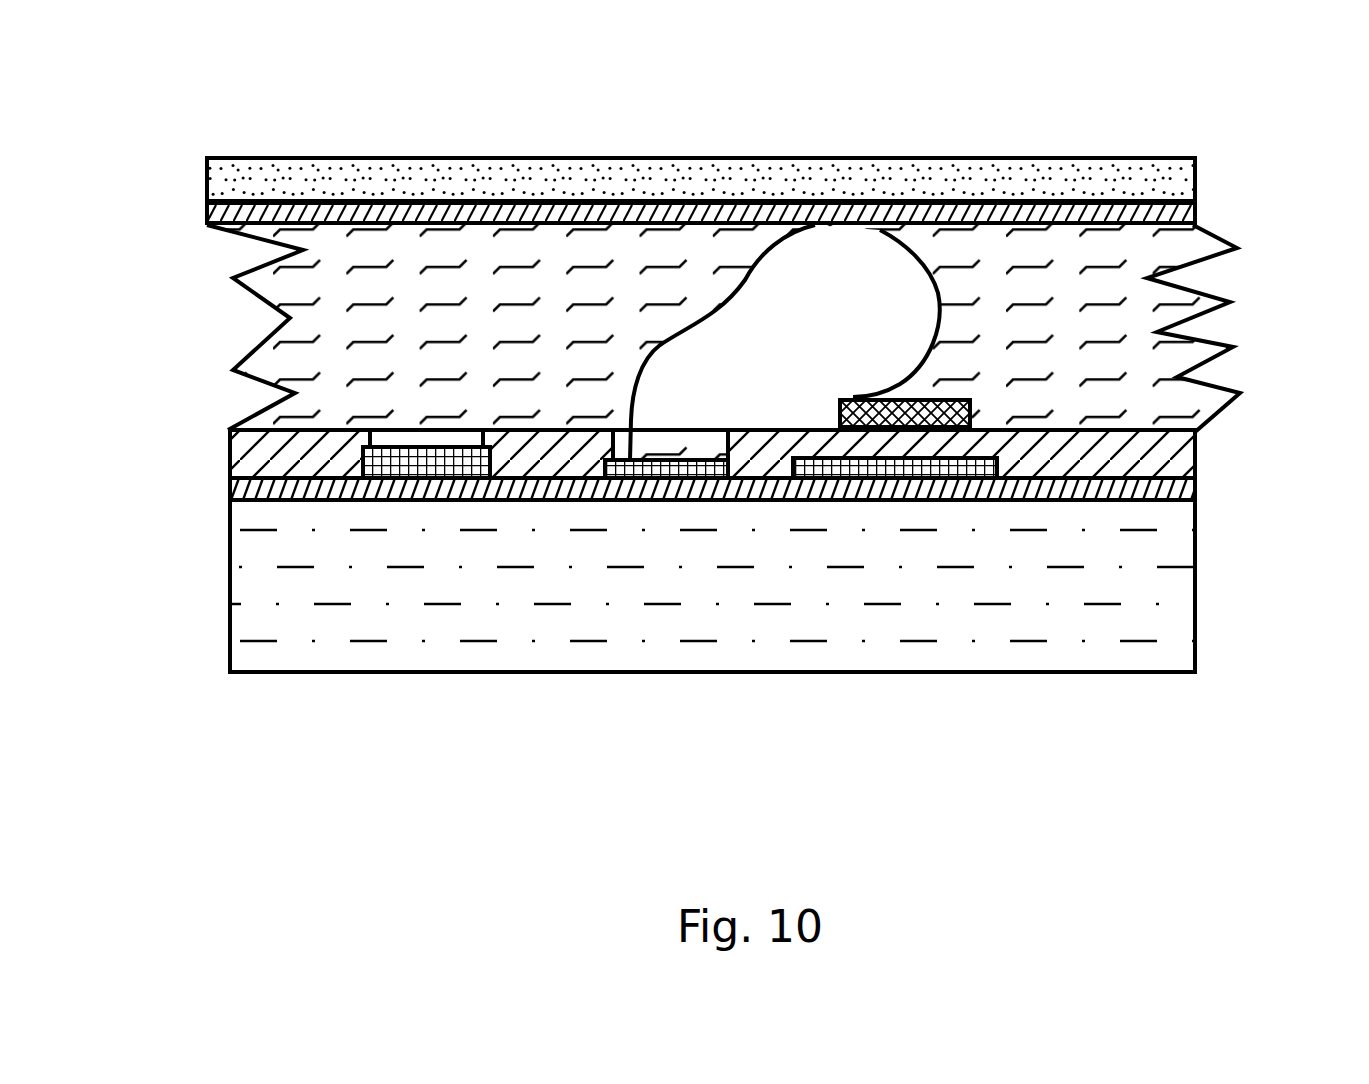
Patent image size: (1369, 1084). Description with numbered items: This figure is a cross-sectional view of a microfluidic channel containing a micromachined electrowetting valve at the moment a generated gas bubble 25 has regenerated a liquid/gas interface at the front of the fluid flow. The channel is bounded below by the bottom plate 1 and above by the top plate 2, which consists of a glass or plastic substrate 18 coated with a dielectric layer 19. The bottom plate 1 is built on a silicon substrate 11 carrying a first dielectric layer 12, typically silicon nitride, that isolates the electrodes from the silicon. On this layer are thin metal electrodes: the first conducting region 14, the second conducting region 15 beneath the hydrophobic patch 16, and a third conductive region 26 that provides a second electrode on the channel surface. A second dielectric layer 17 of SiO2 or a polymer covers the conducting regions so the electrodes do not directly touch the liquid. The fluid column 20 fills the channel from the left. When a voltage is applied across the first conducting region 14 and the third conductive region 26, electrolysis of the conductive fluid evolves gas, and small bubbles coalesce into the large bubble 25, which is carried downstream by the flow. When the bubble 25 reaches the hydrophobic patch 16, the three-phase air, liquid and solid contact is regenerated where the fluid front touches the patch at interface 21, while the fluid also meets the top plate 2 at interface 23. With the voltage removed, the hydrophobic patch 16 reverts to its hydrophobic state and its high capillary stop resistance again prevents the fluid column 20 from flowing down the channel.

The bottom plate 1 is at (530, 633).
The top plate 2 is at (1173, 178).
The silicon substrate 11 is at (367, 627).
The first dielectric layer 12 is at (1087, 503).
The first conducting region 14 is at (648, 483).
The second conducting region 15 is at (940, 490).
The hydrophobic patch 16 is at (833, 460).
The second dielectric layer 17 is at (1037, 455).
The glass or plastic substrate 18 is at (402, 160).
The dielectric layer 19 is at (520, 208).
The fluid column 20 is at (328, 305).
The interface 21 is at (845, 432).
The interface 23 is at (837, 237).
The bubble 25 is at (768, 307).
The third conductive region 26 is at (418, 447).